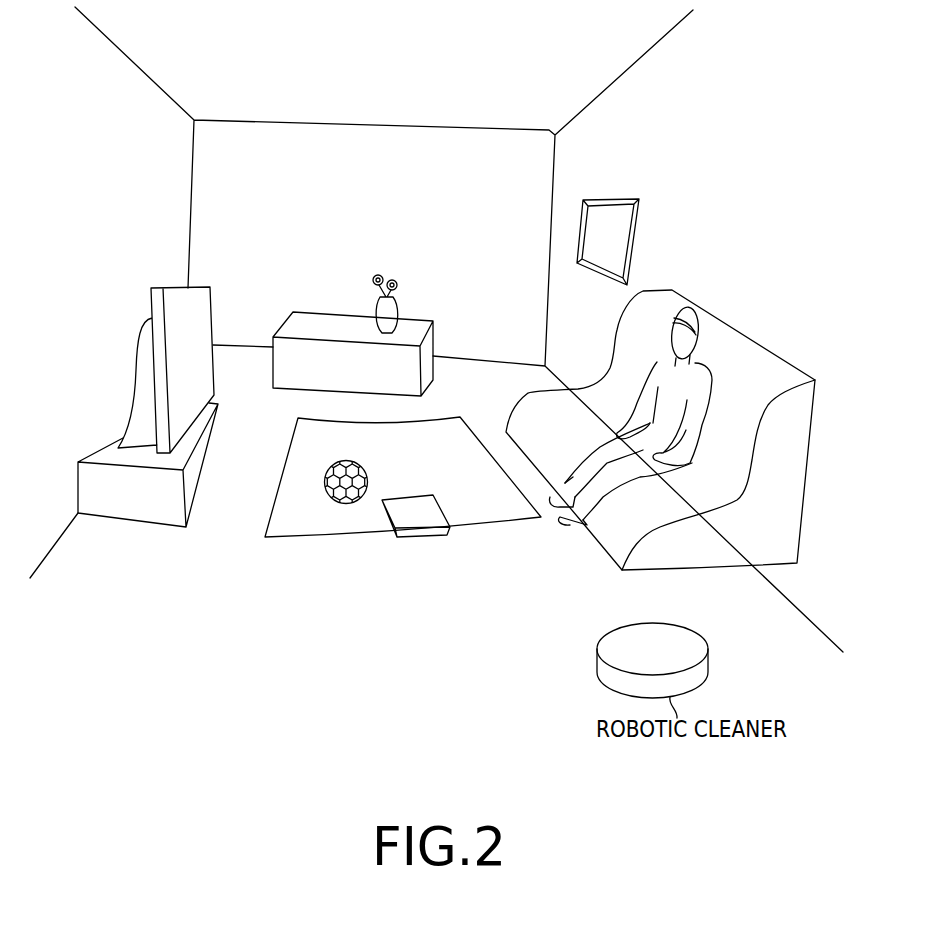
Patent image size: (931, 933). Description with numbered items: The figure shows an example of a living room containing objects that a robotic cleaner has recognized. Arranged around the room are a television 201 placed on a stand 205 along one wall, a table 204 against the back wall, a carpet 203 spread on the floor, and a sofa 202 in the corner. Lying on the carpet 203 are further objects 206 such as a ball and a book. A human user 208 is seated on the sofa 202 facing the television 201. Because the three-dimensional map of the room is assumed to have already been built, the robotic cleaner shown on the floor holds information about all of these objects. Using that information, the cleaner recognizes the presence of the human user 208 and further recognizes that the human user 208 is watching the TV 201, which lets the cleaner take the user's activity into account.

The television 201 is at (211, 295).
The sofa 202 is at (713, 570).
The carpet 203 is at (322, 538).
The table 204 is at (433, 338).
The stand 205 is at (133, 527).
The objects 206 is at (363, 465).
The human user 208 is at (696, 311).